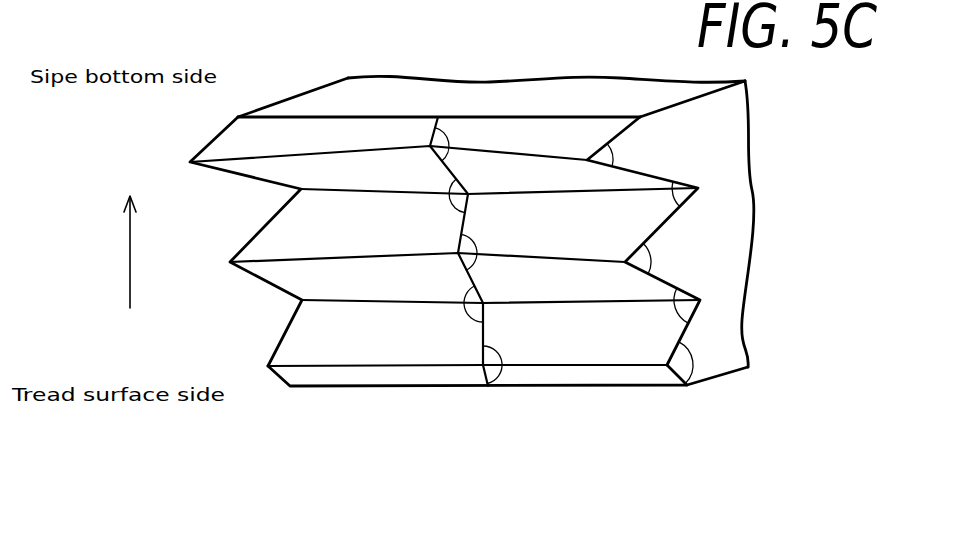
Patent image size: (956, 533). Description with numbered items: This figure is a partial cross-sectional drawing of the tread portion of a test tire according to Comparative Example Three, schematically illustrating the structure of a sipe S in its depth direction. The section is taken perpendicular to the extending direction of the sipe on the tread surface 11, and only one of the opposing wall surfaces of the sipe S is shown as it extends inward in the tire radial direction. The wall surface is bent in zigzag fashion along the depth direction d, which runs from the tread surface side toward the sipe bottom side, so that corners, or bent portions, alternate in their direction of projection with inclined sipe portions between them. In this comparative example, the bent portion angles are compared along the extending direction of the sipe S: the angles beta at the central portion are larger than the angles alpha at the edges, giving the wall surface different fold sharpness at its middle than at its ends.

The sipe S is at (521, 131).
The tread surface 11 is at (588, 387).
The depth direction d is at (123, 252).